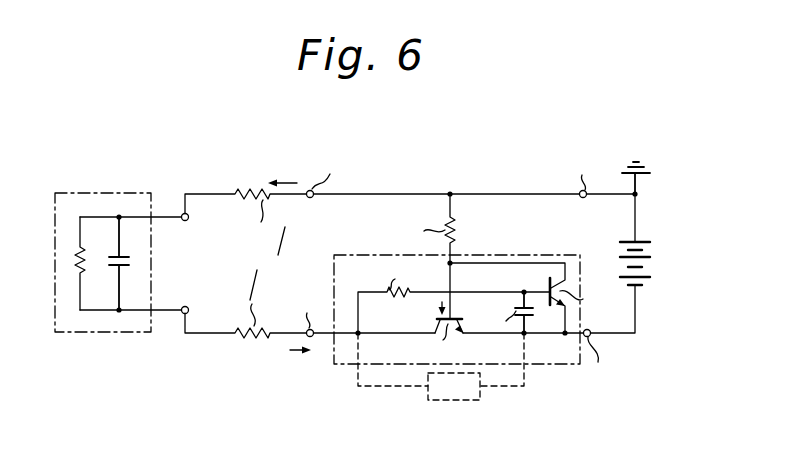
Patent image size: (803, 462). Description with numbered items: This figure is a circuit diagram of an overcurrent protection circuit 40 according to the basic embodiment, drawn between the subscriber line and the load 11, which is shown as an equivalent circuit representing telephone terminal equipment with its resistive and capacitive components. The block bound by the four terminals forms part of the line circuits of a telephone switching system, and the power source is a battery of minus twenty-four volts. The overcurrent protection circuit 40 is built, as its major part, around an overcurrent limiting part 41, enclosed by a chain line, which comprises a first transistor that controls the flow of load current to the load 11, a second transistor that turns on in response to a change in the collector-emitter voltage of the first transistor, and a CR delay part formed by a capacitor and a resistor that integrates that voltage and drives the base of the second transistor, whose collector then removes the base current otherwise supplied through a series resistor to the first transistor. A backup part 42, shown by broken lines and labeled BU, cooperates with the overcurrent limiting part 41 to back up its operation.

The load 11 is at (152, 265).
The overcurrent protection circuit 40 is at (486, 214).
The overcurrent limiting part 41 is at (498, 253).
The backup part 42 is at (460, 400).